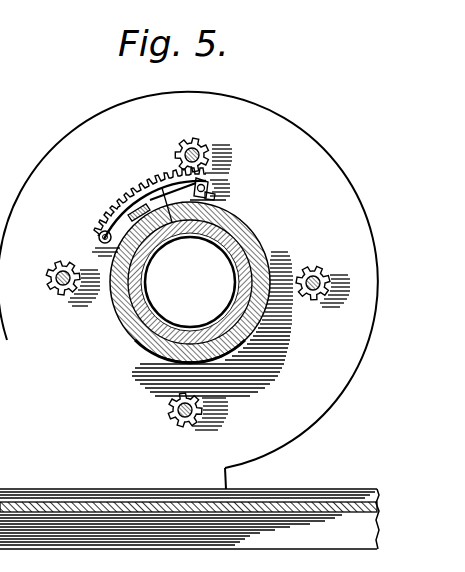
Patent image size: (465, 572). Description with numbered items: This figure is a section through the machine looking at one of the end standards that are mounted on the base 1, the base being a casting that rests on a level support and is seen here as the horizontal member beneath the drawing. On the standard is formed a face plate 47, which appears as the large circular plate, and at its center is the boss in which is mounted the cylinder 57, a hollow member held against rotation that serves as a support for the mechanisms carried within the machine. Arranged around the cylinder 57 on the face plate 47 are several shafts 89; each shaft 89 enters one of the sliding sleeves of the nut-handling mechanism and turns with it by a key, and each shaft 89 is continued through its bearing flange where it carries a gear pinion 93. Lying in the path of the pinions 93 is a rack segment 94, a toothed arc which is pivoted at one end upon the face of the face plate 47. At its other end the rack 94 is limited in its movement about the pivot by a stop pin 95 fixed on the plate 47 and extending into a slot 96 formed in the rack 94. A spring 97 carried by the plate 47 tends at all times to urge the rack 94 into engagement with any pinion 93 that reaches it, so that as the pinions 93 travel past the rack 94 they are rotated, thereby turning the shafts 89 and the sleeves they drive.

The base 1 is at (299, 520).
The face plate 47 is at (70, 135).
The cylinder 57 is at (232, 307).
The shaft 89 is at (180, 150).
The gear pinion 93 is at (200, 149).
The rack segment 94 is at (148, 212).
The stop pin 95 is at (214, 195).
The slot 96 is at (208, 182).
The spring 97 is at (173, 232).